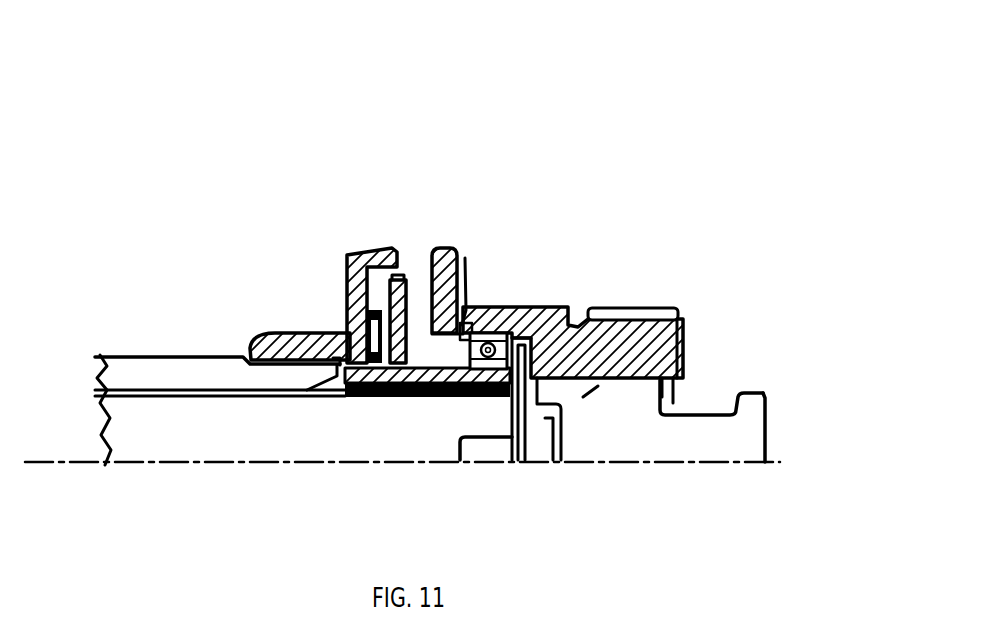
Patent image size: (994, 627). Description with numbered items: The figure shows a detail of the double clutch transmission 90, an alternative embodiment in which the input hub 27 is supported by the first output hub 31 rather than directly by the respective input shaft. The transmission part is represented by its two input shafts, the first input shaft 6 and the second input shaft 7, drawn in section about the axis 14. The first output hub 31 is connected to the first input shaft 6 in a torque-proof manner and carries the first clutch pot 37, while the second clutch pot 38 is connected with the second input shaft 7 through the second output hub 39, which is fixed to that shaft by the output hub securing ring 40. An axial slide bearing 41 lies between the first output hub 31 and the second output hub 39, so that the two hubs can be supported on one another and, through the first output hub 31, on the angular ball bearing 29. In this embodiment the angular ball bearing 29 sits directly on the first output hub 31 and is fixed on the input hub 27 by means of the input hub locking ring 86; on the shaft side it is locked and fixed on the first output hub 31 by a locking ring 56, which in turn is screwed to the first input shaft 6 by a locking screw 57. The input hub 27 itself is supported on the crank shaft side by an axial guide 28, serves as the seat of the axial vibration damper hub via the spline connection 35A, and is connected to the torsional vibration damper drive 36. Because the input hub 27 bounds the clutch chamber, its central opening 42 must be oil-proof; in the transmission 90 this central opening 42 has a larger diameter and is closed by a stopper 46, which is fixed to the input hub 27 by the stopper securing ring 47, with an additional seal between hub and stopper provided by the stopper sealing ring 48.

The double clutch transmission 90 is at (778, 103).
The axis of rotation 14 is at (50, 462).
The second input shaft 7 is at (130, 372).
The first input shaft 6 is at (163, 437).
The second output hub 39 is at (263, 366).
The output hub securing ring 40 is at (294, 390).
The second clutch pot 38 is at (360, 255).
The axial slide bearing 41 is at (372, 397).
The first clutch pot 37 is at (411, 284).
The torsional vibration damper drive 36 is at (440, 262).
The input hub locking ring 86 is at (466, 258).
The first output hub 31 is at (400, 397).
The input hub 27 is at (542, 327).
The angular ball bearing 29 is at (497, 340).
The spline connection 35A is at (630, 324).
The stopper sealing ring 48 is at (663, 363).
The stopper securing ring 47 is at (677, 363).
The axial guide 28 is at (752, 388).
The stopper 46 is at (752, 440).
The locking ring 56 is at (513, 414).
The locking screw 57 is at (547, 417).
The central opening 42 is at (600, 378).